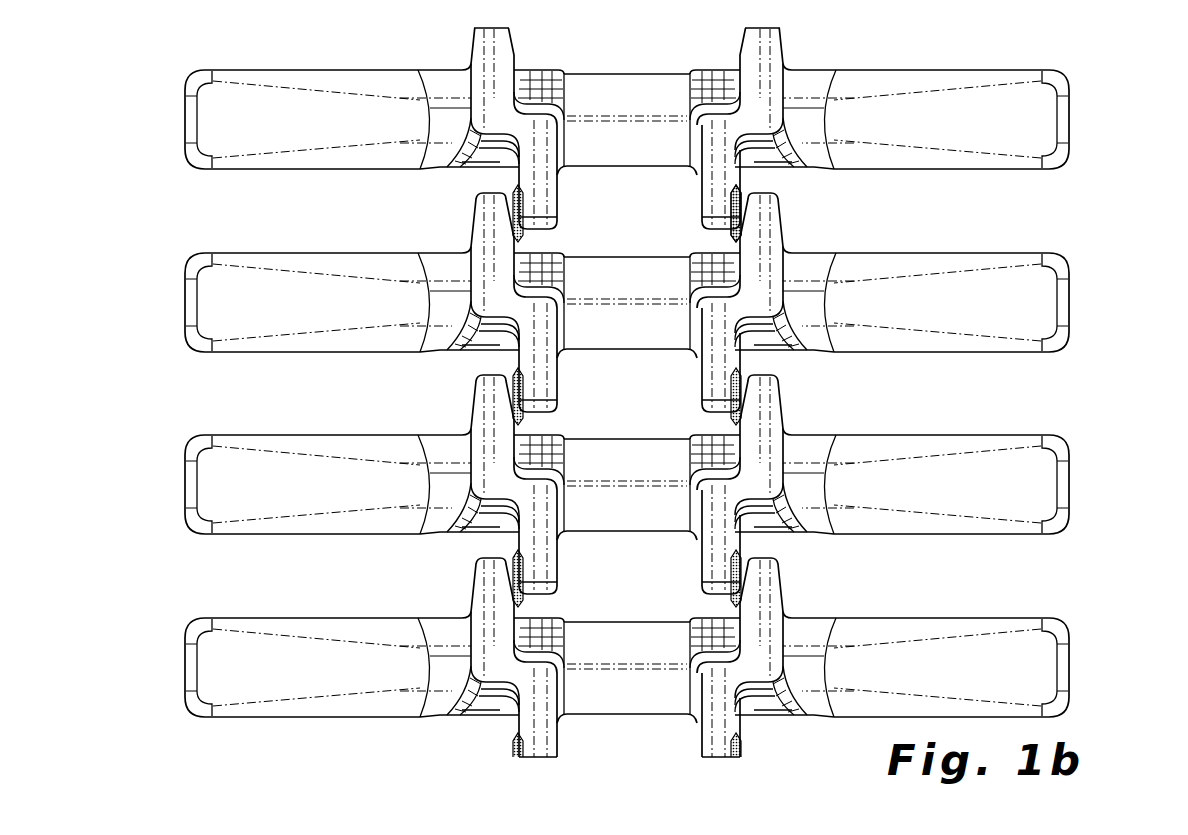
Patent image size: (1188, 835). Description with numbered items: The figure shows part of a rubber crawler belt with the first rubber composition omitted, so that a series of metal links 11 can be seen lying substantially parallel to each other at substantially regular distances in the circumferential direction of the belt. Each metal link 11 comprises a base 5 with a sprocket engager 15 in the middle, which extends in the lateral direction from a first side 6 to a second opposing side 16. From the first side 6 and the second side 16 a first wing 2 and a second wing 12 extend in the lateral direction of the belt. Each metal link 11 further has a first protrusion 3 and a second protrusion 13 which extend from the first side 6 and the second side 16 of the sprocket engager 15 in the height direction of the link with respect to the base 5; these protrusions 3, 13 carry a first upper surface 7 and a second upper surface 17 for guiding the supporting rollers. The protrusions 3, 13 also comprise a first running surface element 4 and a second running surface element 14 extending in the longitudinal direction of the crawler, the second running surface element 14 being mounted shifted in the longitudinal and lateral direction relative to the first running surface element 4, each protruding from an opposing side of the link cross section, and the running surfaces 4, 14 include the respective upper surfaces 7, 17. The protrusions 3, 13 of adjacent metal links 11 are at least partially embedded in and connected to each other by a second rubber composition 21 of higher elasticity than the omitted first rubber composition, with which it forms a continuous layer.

The first wing 2 is at (312, 318).
The second wing 12 is at (987, 310).
The first running surface element 4 is at (508, 251).
The first upper surface 7 is at (513, 303).
The second upper surface 17 is at (774, 303).
The first protrusion 3 is at (487, 317).
The second protrusion 13 is at (776, 311).
The first side 6 is at (495, 348).
The second side 16 is at (770, 352).
The second running surface element 14 is at (558, 370).
The base 5 is at (610, 270).
The sprocket engager 15 is at (605, 325).
The second rubber composition 21 is at (742, 198).
The metal link 11 is at (681, 296).